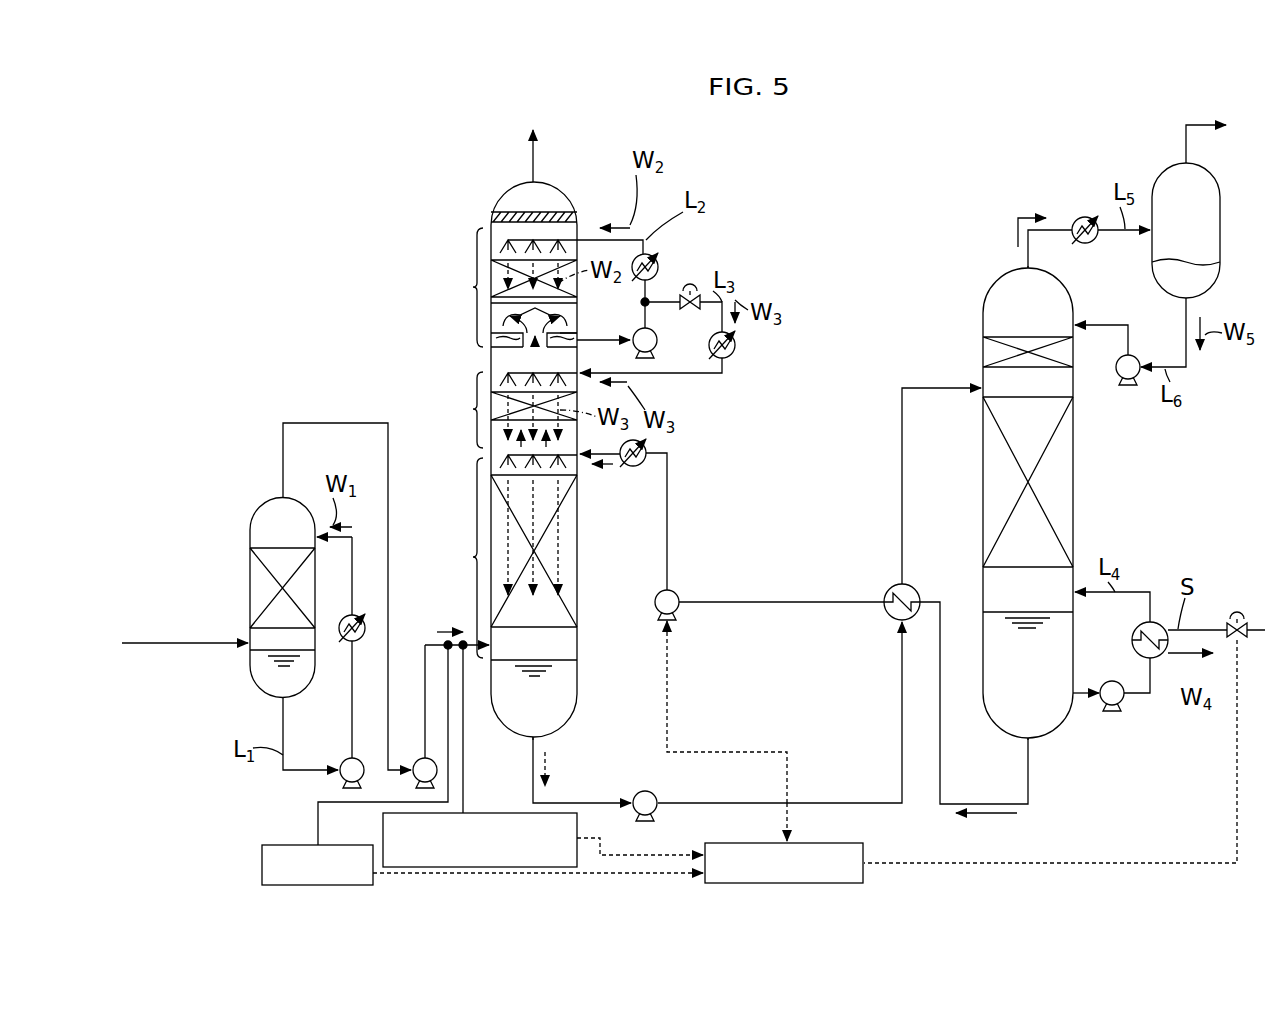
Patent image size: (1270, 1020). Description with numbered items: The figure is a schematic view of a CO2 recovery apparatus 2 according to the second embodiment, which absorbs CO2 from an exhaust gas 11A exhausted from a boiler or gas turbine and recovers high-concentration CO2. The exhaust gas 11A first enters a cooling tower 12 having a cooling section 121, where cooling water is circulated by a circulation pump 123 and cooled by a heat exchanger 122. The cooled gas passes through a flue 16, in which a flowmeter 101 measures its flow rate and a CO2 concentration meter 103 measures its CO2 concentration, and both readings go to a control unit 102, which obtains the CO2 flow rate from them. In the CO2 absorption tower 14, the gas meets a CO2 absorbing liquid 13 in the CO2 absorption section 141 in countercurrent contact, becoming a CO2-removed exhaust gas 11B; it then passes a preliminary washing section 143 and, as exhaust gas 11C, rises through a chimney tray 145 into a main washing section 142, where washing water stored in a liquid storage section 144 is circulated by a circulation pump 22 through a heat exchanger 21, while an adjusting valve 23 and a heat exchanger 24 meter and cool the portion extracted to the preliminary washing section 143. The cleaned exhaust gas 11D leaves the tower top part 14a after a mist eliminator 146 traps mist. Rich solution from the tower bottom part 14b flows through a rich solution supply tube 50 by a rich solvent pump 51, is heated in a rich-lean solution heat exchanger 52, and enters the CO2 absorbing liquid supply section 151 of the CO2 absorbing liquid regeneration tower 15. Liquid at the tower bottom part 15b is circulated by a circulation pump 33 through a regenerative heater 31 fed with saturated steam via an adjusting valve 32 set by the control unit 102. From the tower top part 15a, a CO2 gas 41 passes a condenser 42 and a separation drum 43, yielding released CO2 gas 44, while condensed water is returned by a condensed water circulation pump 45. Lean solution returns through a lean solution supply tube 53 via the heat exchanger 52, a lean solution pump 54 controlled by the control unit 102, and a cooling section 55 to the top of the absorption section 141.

The CO2 recovery apparatus 2 is at (855, 147).
The exhaust gas 11A is at (210, 643).
The exhaust gas 11B is at (520, 447).
The exhaust gas 11C is at (527, 348).
The exhaust gas 11D is at (529, 150).
The cooling tower 12 is at (243, 500).
The cooling section 121 is at (250, 565).
The heat exchanger 122 is at (345, 648).
The circulation pump 123 is at (342, 762).
The CO2 absorbing liquid 13 is at (1000, 813).
The CO2 absorption tower 14 is at (472, 212).
The tower top part 14a is at (547, 187).
The tower bottom part 14b is at (572, 717).
The CO2 absorption section 141 is at (473, 558).
The main washing section 142 is at (473, 282).
The preliminary washing section 143 is at (473, 410).
The liquid storage section 144 is at (568, 332).
The chimney tray 145 is at (500, 316).
The mist eliminator 146 is at (515, 207).
The CO2 absorbing liquid regeneration tower 15 is at (1084, 478).
The tower top part 15a is at (995, 272).
The tower bottom part 15b is at (1050, 728).
The CO2 absorbing liquid supply section 151 is at (1074, 515).
The flue 16 is at (423, 710).
The heat exchanger 21 is at (657, 262).
The circulation pump 22 is at (657, 319).
The adjusting valve 23 is at (688, 290).
The heat exchanger 24 is at (736, 345).
The regenerative heater 31 is at (1150, 622).
The adjusting valve 32 is at (1237, 618).
The circulation pump 33 is at (1110, 681).
The CO2 gas 41 is at (1025, 215).
The condenser 42 is at (1085, 213).
The separation drum 43 is at (1222, 228).
The CO2 gas 44 is at (1195, 124).
The condensed water circulation pump 45 is at (1130, 355).
The rich solution supply tube 50 is at (600, 802).
The rich solvent pump 51 is at (645, 790).
The rich-lean solution heat exchanger 52 is at (888, 615).
The lean solution supply tube 53 is at (940, 785).
The lean solution pump 54 is at (675, 590).
The cooling section 55 is at (645, 451).
The flowmeter 101 is at (345, 845).
The control unit 102 is at (822, 843).
The CO2 concentration meter 103 is at (488, 813).